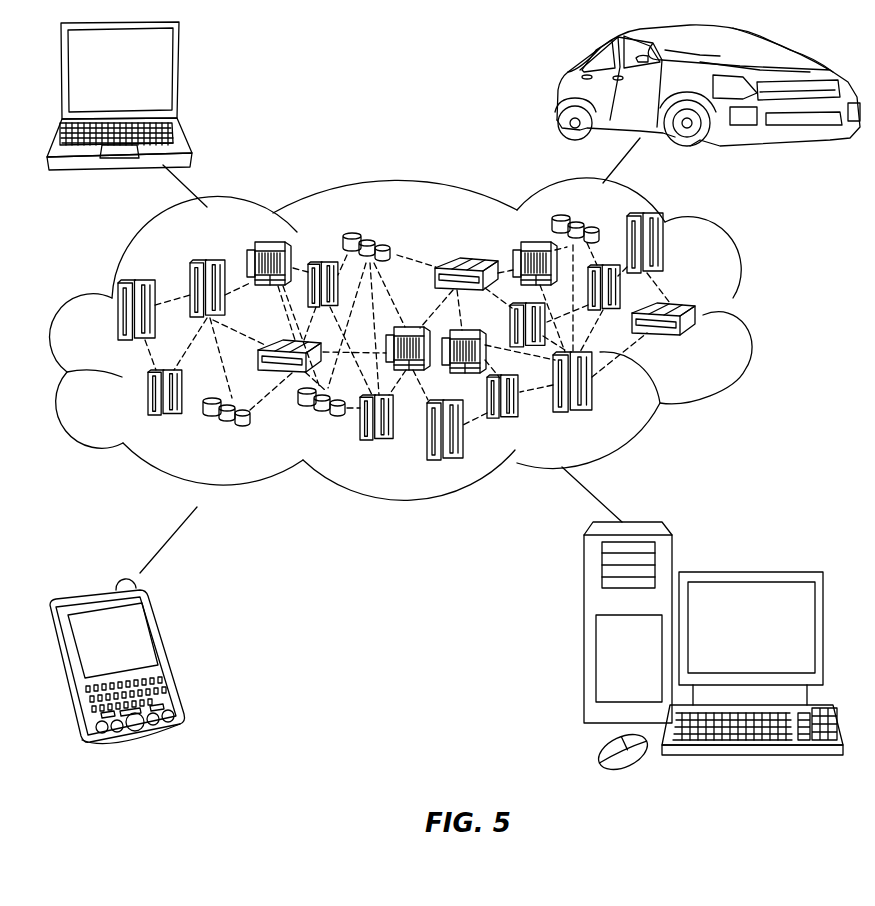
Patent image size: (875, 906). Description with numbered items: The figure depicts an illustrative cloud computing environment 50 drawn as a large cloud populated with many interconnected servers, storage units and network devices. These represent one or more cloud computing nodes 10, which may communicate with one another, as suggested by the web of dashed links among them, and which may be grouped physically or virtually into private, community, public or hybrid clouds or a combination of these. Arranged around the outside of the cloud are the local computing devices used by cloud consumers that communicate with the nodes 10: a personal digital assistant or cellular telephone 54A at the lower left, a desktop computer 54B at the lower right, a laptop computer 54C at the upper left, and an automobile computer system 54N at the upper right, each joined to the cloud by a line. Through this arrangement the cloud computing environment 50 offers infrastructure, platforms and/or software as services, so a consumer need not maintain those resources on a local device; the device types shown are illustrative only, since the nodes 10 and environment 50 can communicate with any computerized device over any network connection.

The cloud computing node 10 is at (703, 348).
The cloud computing environment 50 is at (750, 320).
The personal digital assistant or cellular telephone 54A is at (172, 650).
The desktop computer 54B is at (748, 572).
The laptop computer 54C is at (181, 78).
The automobile computer system 54N is at (560, 92).